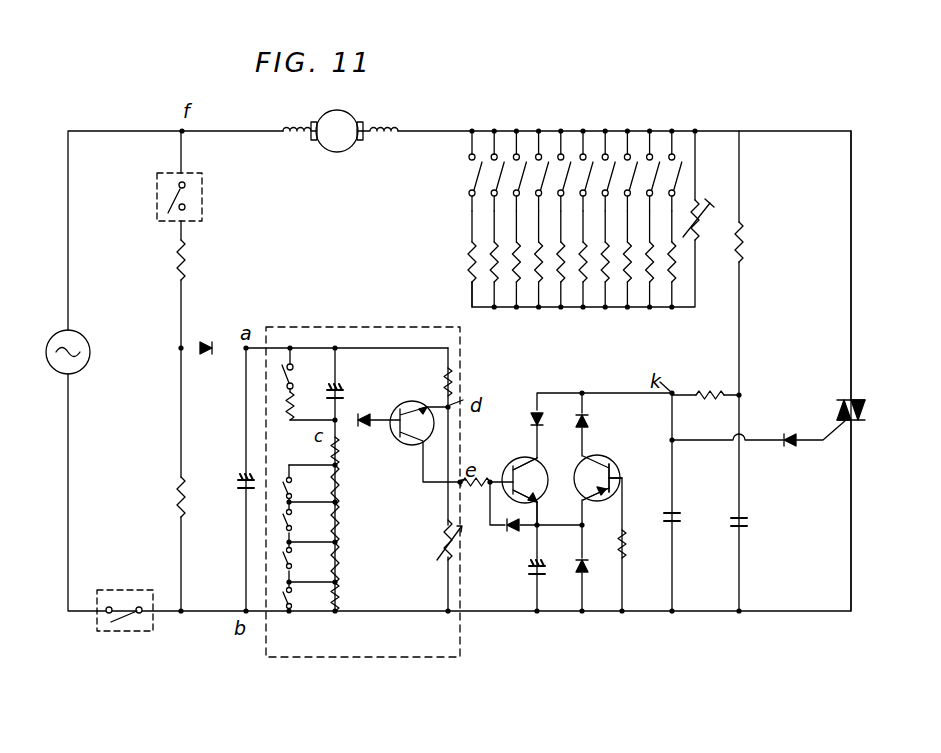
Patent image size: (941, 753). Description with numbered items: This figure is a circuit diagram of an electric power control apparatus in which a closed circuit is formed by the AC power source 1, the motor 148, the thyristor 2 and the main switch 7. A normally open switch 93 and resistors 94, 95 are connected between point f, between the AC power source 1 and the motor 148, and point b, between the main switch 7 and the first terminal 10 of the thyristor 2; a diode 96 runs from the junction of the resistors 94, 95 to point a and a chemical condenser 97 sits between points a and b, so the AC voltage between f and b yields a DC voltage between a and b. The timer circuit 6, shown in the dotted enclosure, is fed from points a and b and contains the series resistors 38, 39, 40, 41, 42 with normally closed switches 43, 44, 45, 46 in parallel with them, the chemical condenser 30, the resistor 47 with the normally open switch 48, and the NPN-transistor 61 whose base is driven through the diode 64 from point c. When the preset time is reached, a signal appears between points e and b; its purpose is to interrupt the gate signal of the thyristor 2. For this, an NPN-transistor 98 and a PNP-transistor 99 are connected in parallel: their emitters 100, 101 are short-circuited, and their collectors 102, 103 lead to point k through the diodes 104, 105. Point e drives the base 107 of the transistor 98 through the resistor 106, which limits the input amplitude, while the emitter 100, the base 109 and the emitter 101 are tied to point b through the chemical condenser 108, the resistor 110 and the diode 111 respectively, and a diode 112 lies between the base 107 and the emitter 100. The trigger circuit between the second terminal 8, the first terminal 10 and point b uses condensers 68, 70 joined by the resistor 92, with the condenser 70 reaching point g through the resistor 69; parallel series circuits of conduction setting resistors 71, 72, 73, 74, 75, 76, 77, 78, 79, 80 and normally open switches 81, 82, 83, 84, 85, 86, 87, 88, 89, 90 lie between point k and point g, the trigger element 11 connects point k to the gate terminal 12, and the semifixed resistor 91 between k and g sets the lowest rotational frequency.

The AC power source 1 is at (61, 373).
The thyristor 2 is at (866, 412).
The timer circuit 6 is at (372, 658).
The main switch 7 is at (120, 633).
The second terminal of the thyristor 8 is at (852, 368).
The first terminal of the thyristor 10 is at (852, 458).
The trigger element 11 is at (787, 448).
The gate terminal 12 is at (822, 444).
The chemical condenser 30 is at (343, 392).
The resistor 38 is at (340, 449).
The resistor 39 is at (340, 485).
The resistor 40 is at (340, 520).
The resistor 41 is at (340, 554).
The resistor 42 is at (340, 593).
The normally closed switch 43 is at (289, 477).
The normally closed switch 44 is at (285, 517).
The normally closed switch 45 is at (285, 560).
The normally closed switch 46 is at (285, 596).
The resistor 47 is at (288, 407).
The normally open switch 48 is at (293, 372).
The NPN-transistor 61 is at (410, 401).
The diode 64 is at (364, 415).
The condenser 68 is at (675, 525).
The resistor 69 is at (743, 249).
The condenser 70 is at (748, 525).
The conduction setting resistor 71 is at (467, 266).
The conduction setting resistor 72 is at (493, 307).
The conduction setting resistor 73 is at (515, 307).
The conduction setting resistor 74 is at (538, 307).
The conduction setting resistor 75 is at (560, 307).
The conduction setting resistor 76 is at (582, 307).
The conduction setting resistor 77 is at (604, 307).
The conduction setting resistor 78 is at (627, 307).
The conduction setting resistor 79 is at (649, 307).
The conduction setting resistor 80 is at (672, 307).
The normally open switch 81 is at (474, 154).
The normally open switch 82 is at (496, 154).
The normally open switch 83 is at (518, 154).
The normally open switch 84 is at (540, 154).
The normally open switch 85 is at (562, 154).
The normally open switch 86 is at (585, 154).
The normally open switch 87 is at (607, 154).
The normally open switch 88 is at (629, 154).
The normally open switch 89 is at (651, 154).
The normally open switch 90 is at (674, 154).
The semifixed resistor 91 is at (706, 206).
The resistor 92 is at (708, 393).
The normally open switch 93 is at (204, 176).
The resistor 94 is at (196, 268).
The resistor 95 is at (174, 500).
The diode 96 is at (206, 343).
The chemical condenser 97 is at (238, 487).
The NPN-transistor 98 is at (531, 492).
The PNP-transistor 99 is at (612, 470).
The emitter of transistor 98 100 is at (540, 518).
The emitter of transistor 99 101 is at (591, 500).
The collector of transistor 98 102 is at (541, 460).
The collector of transistor 99 103 is at (591, 460).
The diode 104 is at (535, 411).
The diode 105 is at (591, 417).
The resistor 106 is at (482, 478).
The base of transistor 98 107 is at (532, 462).
The chemical condenser 108 is at (528, 573).
The base of transistor 99 109 is at (616, 480).
The resistor 110 is at (626, 550).
The diode 111 is at (587, 573).
The diode 112 is at (510, 530).
The motor 148 is at (372, 109).